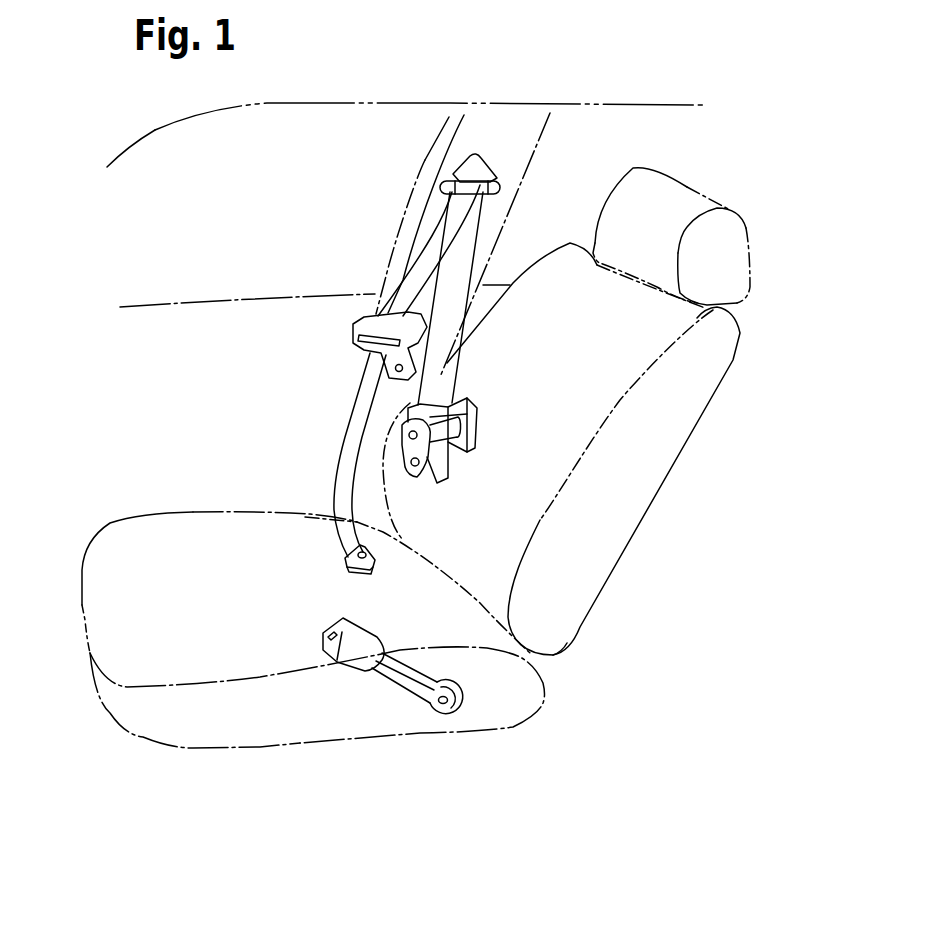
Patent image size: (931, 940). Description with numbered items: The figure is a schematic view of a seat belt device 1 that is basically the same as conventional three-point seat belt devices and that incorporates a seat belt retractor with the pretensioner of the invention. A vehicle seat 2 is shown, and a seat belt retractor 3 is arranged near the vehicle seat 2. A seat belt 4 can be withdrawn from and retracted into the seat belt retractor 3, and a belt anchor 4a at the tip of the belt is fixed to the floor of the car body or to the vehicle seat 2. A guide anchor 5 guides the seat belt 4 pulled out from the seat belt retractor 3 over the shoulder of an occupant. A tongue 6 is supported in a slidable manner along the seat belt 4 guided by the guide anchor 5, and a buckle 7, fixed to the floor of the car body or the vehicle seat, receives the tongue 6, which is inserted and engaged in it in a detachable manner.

The seat belt device 1 is at (500, 516).
The vehicle seat 2 is at (227, 727).
The seat belt retractor 3 is at (474, 430).
The seat belt 4 is at (432, 257).
The belt anchor 4a is at (362, 568).
The guide anchor 5 is at (487, 178).
The tongue 6 is at (355, 333).
The buckle 7 is at (337, 650).